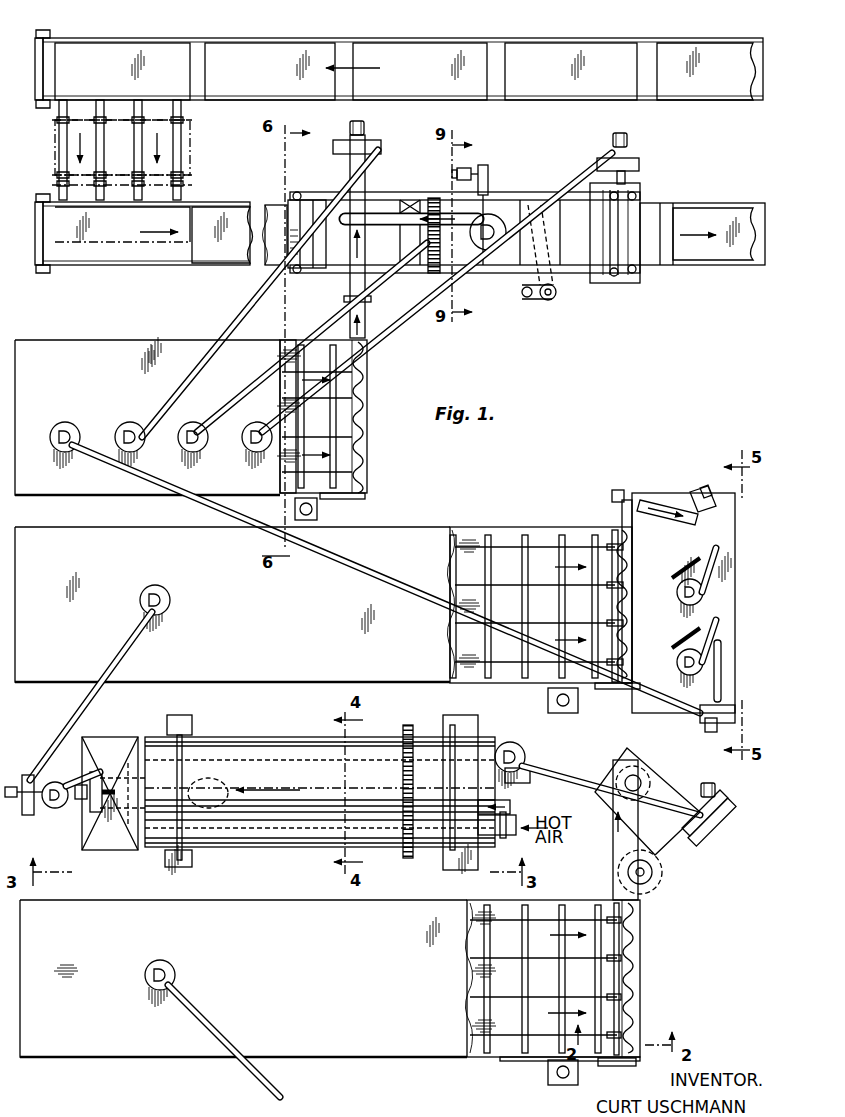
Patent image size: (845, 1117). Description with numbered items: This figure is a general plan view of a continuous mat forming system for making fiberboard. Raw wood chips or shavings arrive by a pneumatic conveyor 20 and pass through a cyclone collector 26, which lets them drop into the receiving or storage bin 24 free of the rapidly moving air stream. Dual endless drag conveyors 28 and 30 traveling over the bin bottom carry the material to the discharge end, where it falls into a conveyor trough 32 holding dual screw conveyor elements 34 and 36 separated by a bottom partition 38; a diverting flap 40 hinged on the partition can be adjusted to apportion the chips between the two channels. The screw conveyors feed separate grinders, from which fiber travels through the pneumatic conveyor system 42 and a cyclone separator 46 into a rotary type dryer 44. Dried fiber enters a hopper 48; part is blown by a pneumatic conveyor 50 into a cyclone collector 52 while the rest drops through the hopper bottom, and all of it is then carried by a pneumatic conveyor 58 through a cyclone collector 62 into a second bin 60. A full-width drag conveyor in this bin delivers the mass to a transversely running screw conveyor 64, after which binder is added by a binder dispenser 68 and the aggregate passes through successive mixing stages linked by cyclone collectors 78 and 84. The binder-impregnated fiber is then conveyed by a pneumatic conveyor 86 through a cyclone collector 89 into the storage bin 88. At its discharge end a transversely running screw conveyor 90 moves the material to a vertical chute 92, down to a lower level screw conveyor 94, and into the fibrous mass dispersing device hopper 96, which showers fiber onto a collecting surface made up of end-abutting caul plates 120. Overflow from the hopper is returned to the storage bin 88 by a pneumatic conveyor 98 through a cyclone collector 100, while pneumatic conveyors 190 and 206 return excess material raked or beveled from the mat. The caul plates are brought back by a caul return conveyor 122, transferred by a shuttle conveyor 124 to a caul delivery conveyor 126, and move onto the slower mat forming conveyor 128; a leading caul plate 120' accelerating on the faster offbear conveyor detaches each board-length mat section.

The caul plate 120 is at (405, 133).
The caul return conveyor 122 is at (347, 38).
The shuttle conveyor 124 is at (55, 147).
The caul delivery conveyor 126 is at (66, 268).
The leading caul plate 120' is at (514, 215).
The mat forming conveyor 128 is at (305, 213).
The fibrous mass dispersing device hopper 96 is at (366, 210).
The lower level screw conveyor 94 is at (348, 282).
The pneumatic conveyor 98 is at (373, 160).
The pneumatic conveyor 206 is at (405, 331).
The pneumatic conveyor 190 is at (374, 316).
The vertical chute 92 is at (340, 300).
The transversely running screw conveyor 90 is at (370, 405).
The storage bin 88 is at (128, 338).
The cyclone collector 89 is at (66, 421).
The cyclone collector 100 is at (134, 423).
The pneumatic conveyor 86 is at (388, 585).
The second bin 60 is at (402, 527).
The screw conveyor 64 is at (612, 545).
The binder dispenser 68 is at (620, 497).
The cyclone collector 78 is at (679, 600).
The cyclone collector 84 is at (684, 668).
The cyclone collector 62 is at (171, 596).
The pneumatic conveyor 58 is at (52, 730).
The cyclone collector 52 is at (63, 812).
The pneumatic conveyor 50 is at (75, 770).
The hopper 48 is at (116, 740).
The rotary type dryer 44 is at (372, 741).
The cyclone separator 46 is at (528, 753).
The diverting flap 40 is at (638, 783).
The pneumatic conveyor system 42 is at (703, 824).
The bottom partition 38 is at (655, 878).
The receiving or storage bin 24 is at (375, 1062).
The cyclone collector 26 is at (145, 986).
The pneumatic conveyor 20 is at (251, 1086).
The endless drag conveyor 30 is at (508, 930).
The conveyor trough 32 is at (645, 969).
The screw conveyor element 34 is at (645, 1003).
The screw conveyor element 36 is at (625, 1026).
The endless drag conveyor 28 is at (512, 1060).